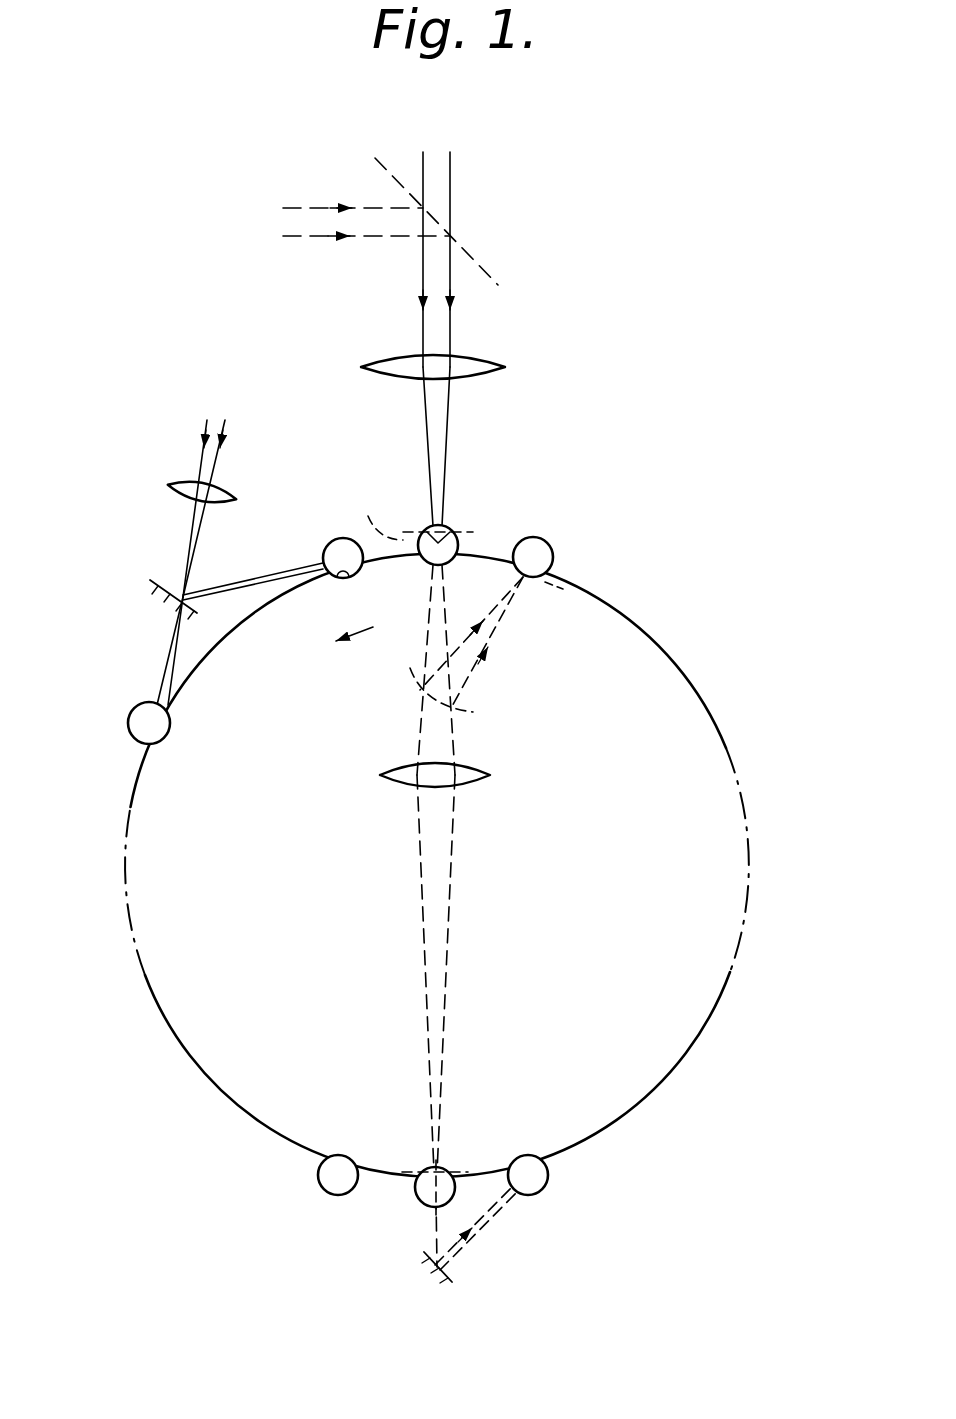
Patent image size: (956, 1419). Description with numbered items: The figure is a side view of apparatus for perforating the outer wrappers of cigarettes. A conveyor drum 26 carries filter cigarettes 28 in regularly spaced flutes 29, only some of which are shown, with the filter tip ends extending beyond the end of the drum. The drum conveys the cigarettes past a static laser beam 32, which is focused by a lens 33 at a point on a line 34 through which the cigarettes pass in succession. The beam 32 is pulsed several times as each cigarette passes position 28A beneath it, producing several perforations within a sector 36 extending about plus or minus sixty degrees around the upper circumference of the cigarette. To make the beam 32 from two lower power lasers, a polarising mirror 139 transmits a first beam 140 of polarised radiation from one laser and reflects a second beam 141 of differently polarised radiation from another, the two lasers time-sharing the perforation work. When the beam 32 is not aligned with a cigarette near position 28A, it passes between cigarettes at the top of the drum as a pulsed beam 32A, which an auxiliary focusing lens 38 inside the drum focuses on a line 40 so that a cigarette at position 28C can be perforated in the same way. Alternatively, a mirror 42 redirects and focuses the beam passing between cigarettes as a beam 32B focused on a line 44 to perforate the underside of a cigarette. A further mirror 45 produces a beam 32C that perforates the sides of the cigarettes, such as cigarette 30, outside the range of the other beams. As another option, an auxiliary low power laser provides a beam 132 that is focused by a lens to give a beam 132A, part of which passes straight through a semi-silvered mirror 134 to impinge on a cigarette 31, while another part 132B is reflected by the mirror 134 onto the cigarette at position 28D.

The conveyor drum 26 is at (650, 873).
The filter cigarettes 28 is at (557, 553).
The position beneath the beam 28A is at (457, 538).
The position at bottom of drum 28C is at (418, 1198).
The position of cigarette receiving reflected auxiliary beam 28D is at (338, 550).
The flutes 29 is at (348, 585).
The cigarette 30 is at (537, 1152).
The cigarette 31 is at (137, 723).
The static laser beam 32 is at (452, 340).
The pulsed beam 32A is at (448, 965).
The beam 32B is at (477, 670).
The beam 32C is at (480, 1245).
The lens 33 is at (477, 373).
The line 34 is at (462, 532).
The sector 36 is at (373, 513).
The auxiliary focusing lens 38 is at (473, 783).
The line 40 is at (458, 1172).
The mirror 42 is at (410, 685).
The line 44 is at (543, 580).
The further mirror 45 is at (423, 1258).
The auxiliary beam 132 is at (202, 465).
The beam 132A is at (165, 642).
The reflected beam part 132B is at (238, 578).
The semi-silvered mirror 134 is at (165, 583).
The polarising mirror 139 is at (467, 253).
The first beam 140 is at (452, 207).
The second beam 141 is at (323, 238).